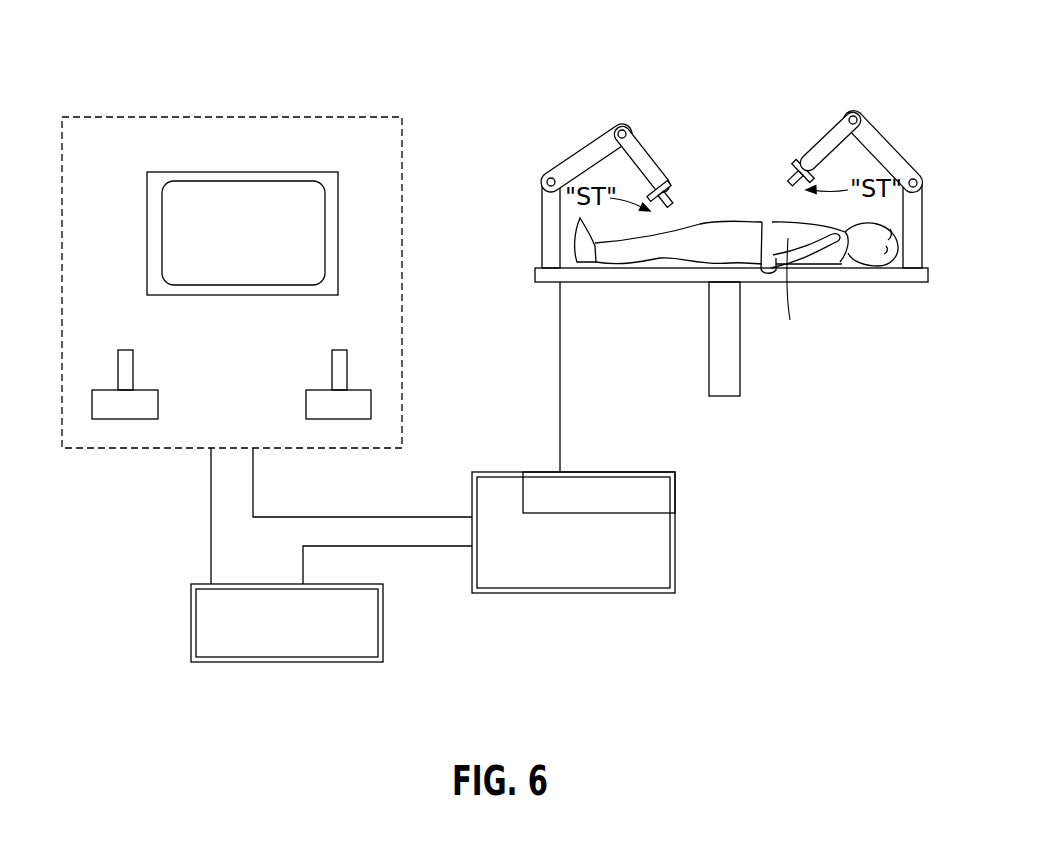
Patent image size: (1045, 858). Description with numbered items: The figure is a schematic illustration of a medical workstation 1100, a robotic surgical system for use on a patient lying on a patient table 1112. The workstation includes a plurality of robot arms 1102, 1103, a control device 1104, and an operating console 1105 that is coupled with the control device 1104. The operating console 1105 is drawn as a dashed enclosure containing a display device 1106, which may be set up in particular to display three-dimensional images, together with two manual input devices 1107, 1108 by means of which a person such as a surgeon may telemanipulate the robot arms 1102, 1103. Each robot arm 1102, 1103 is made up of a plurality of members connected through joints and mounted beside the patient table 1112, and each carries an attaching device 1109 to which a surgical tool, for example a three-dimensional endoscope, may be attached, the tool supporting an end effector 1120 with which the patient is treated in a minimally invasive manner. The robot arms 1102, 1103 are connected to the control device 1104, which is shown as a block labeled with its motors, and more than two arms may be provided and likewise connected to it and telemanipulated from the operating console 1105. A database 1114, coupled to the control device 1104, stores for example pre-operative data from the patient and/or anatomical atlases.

The medical workstation 1100 is at (797, 402).
The robot arm 1102 is at (562, 130).
The robot arm 1103 is at (796, 158).
The control device 1104 is at (607, 546).
The operating console 1105 is at (193, 82).
The display device 1106 is at (276, 248).
The manual input device 1107 is at (108, 421).
The manual input device 1108 is at (348, 421).
The attaching device 1109 is at (668, 184).
The patient table 1112 is at (627, 273).
The database 1114 is at (320, 638).
The end effector 1120 is at (673, 196).